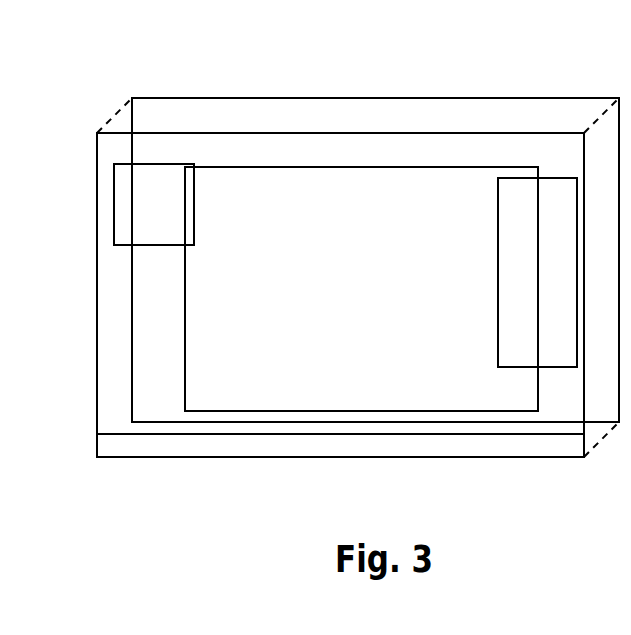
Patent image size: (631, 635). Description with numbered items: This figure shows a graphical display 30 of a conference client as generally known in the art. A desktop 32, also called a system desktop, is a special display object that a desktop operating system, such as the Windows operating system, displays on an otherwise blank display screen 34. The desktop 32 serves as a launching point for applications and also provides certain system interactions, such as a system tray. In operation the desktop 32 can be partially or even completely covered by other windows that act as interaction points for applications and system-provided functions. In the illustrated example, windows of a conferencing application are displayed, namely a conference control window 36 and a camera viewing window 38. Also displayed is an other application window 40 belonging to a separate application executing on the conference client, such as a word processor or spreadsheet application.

The graphical display 30 is at (191, 511).
The desktop 32 is at (297, 133).
The display screen 34 is at (332, 98).
The conference control window 36 is at (526, 306).
The camera viewing window 38 is at (164, 236).
The other application window 40 is at (349, 332).